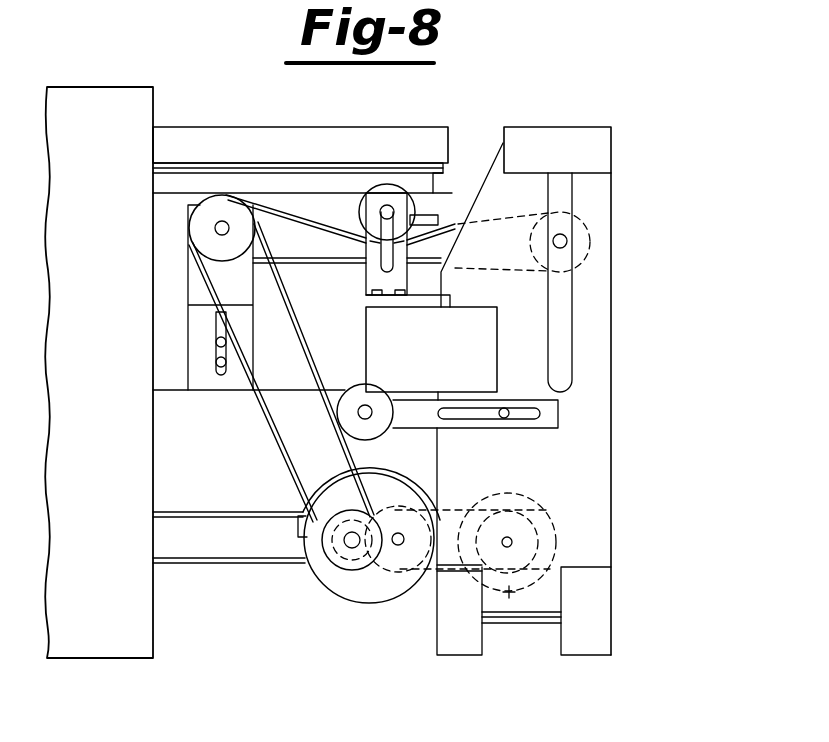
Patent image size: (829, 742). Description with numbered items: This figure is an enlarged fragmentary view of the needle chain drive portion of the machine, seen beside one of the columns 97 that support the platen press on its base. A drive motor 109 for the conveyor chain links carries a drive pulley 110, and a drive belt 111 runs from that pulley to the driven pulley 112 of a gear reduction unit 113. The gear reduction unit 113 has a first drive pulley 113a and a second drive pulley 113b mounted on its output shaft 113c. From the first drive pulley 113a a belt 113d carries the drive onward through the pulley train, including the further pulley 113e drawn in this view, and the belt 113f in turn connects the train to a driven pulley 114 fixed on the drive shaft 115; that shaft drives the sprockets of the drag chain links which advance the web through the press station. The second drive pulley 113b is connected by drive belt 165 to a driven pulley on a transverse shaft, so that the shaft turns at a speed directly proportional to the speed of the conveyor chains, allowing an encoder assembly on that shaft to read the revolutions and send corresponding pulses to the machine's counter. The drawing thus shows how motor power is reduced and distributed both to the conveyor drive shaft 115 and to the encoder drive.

The columns 97 is at (150, 573).
The drive motor 109 is at (553, 522).
The drive pulley 110 is at (333, 560).
The drive belt 111 is at (452, 514).
The driven pulley 112 is at (428, 470).
The gear reduction unit 113 is at (371, 606).
The first drive pulley 113a is at (344, 575).
The second drive pulley 113b is at (341, 470).
The output shaft 113c is at (347, 540).
The belt 113d is at (272, 452).
The upper pulley 113e is at (198, 232).
The belt 113f is at (314, 267).
The driven pulley 114 is at (573, 235).
The drive shaft 115 is at (566, 247).
The drive belt 165 is at (243, 565).